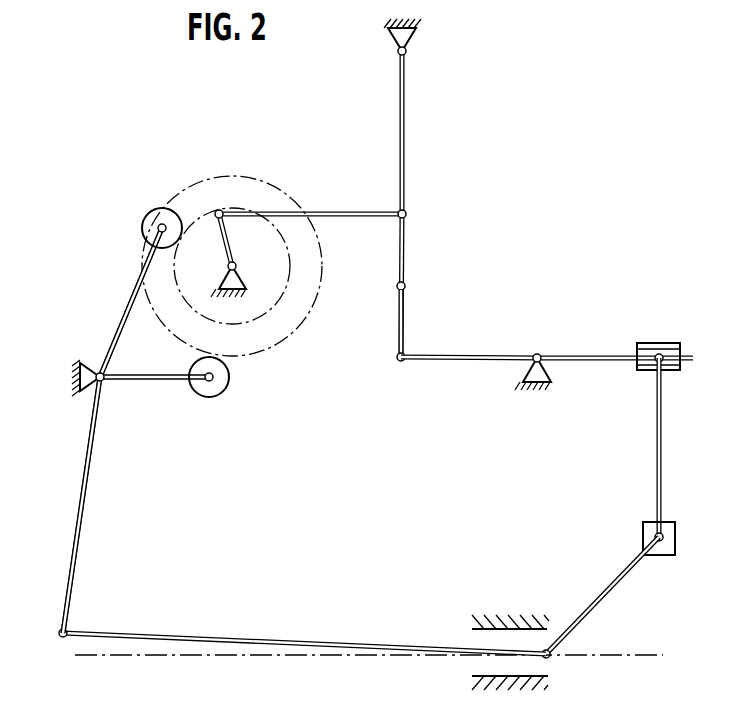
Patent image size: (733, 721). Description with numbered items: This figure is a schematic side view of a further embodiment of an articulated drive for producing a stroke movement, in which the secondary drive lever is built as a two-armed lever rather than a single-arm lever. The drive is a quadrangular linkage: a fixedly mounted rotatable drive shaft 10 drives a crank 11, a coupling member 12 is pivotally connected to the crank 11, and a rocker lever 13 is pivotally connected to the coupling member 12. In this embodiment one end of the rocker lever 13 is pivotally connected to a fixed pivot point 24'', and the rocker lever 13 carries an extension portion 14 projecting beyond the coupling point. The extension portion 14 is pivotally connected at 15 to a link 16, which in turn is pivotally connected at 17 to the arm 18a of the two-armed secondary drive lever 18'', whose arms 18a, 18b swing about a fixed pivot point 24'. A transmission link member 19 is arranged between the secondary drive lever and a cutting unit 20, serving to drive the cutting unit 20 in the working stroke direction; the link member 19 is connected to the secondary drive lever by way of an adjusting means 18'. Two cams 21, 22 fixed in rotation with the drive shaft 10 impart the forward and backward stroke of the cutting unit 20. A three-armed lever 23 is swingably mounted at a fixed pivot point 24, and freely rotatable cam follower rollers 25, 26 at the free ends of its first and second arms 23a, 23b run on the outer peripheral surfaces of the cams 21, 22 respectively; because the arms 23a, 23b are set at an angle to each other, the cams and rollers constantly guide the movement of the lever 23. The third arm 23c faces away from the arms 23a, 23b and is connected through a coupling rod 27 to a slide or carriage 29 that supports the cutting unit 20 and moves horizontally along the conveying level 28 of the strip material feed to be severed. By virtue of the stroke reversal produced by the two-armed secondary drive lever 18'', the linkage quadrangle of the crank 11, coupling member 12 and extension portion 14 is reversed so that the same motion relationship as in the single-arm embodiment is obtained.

The drive shaft 10 is at (236, 265).
The crank 11 is at (225, 238).
The coupling member 12 is at (341, 212).
The rocker lever 13 is at (405, 120).
The extension portion 14 is at (405, 241).
The pivot connection 15 is at (405, 285).
The link 16 is at (405, 330).
The pivot connection 17 is at (405, 362).
The arm 18a is at (498, 352).
The arm 18b is at (609, 355).
The adjusting means 18' is at (660, 338).
The two-armed secondary drive lever 18'' is at (550, 276).
The transmission link member 19 is at (662, 450).
The cutting unit 20 is at (655, 545).
The cam 21 is at (285, 300).
The cam 22 is at (276, 342).
The three-armed lever 23 is at (160, 401).
The first arm 23a is at (128, 307).
The second arm 23b is at (175, 372).
The third arm 23c is at (85, 458).
The fixed pivot point 24 is at (93, 359).
The fixed pivot point 24' is at (509, 377).
The fixed pivot point 24'' is at (429, 37).
The cam follower roller 25 is at (150, 215).
The cam follower roller 26 is at (219, 386).
The coupling rod 27 is at (270, 641).
The conveying level 28 is at (341, 657).
The slide or carriage 29 is at (544, 650).